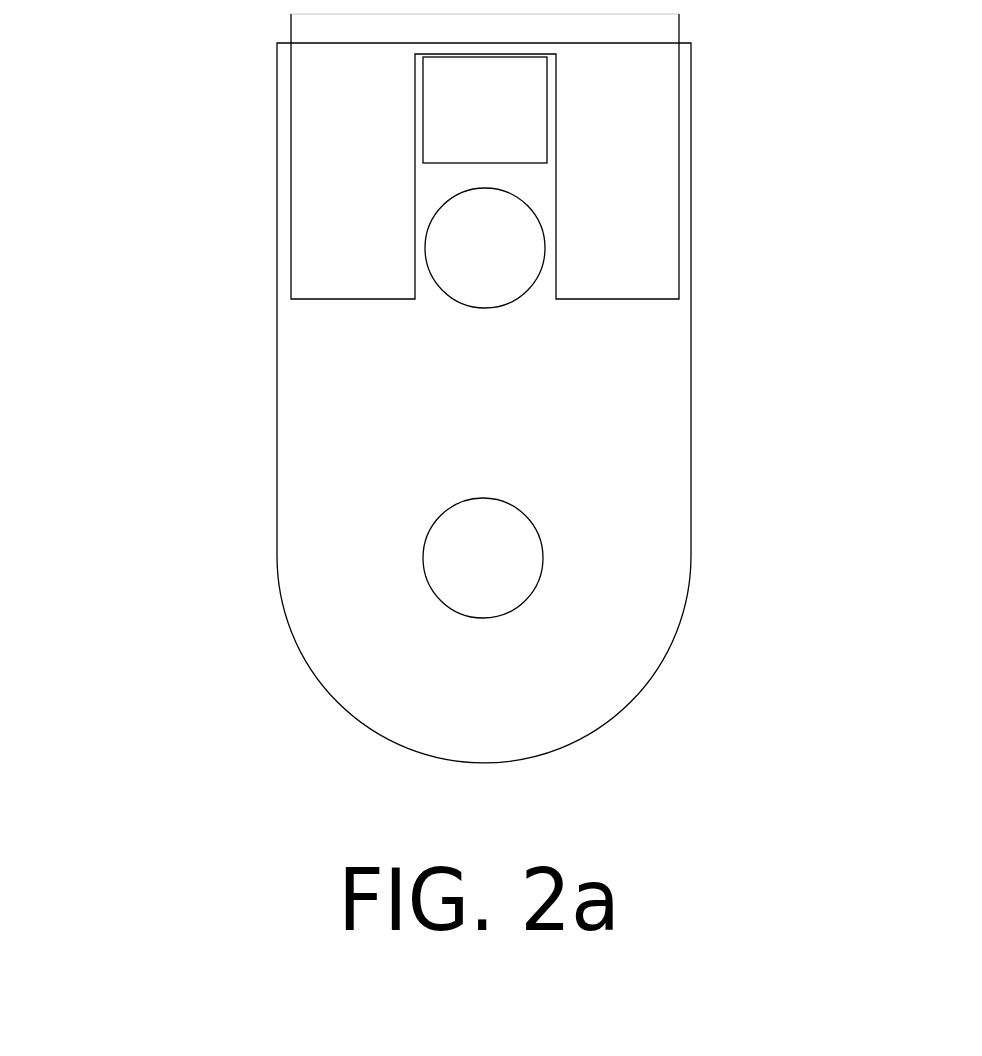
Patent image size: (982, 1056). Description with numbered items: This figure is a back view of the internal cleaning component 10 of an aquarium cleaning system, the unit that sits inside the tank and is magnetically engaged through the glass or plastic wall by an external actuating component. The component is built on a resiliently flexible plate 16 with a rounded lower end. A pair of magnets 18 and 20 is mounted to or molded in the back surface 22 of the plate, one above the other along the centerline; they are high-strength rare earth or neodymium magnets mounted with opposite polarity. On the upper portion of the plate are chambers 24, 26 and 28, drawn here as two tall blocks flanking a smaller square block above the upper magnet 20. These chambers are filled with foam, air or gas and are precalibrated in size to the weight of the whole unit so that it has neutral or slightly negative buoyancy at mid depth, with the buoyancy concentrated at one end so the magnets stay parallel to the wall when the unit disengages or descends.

The internal cleaning component 10 is at (232, 312).
The resiliently flexible plate 16 is at (691, 458).
The magnet 18 is at (493, 558).
The magnet 20 is at (493, 249).
The back surface 22 is at (343, 593).
The chamber 24 is at (339, 187).
The chamber 26 is at (619, 137).
The chamber 28 is at (507, 105).